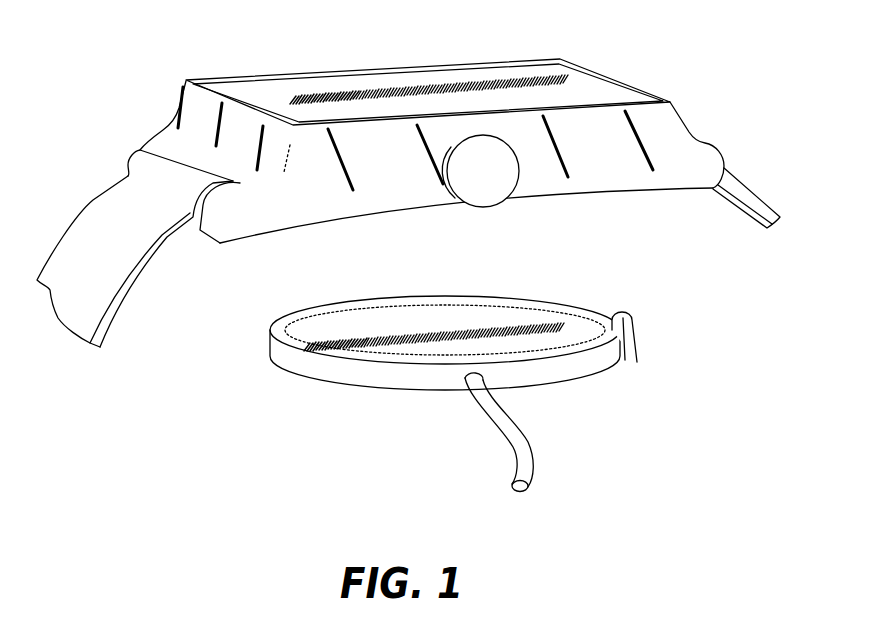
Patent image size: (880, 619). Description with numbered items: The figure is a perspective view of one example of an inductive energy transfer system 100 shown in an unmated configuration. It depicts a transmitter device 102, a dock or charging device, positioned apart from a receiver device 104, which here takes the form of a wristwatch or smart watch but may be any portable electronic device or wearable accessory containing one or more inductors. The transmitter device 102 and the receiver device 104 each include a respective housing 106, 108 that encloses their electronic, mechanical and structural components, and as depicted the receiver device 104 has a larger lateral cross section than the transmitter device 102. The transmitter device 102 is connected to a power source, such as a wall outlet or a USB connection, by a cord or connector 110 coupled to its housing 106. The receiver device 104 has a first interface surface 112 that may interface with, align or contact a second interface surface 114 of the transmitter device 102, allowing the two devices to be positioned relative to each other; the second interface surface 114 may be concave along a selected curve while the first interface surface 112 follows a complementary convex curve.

The inductive energy transfer system 100 is at (408, 268).
The transmitter device 102 is at (450, 416).
The receiver device 104 is at (408, 178).
The housing 106 is at (557, 385).
The housing 108 is at (386, 92).
The cord or connector 110 is at (513, 488).
The first interface surface 112 is at (573, 190).
The second interface surface 114 is at (637, 362).